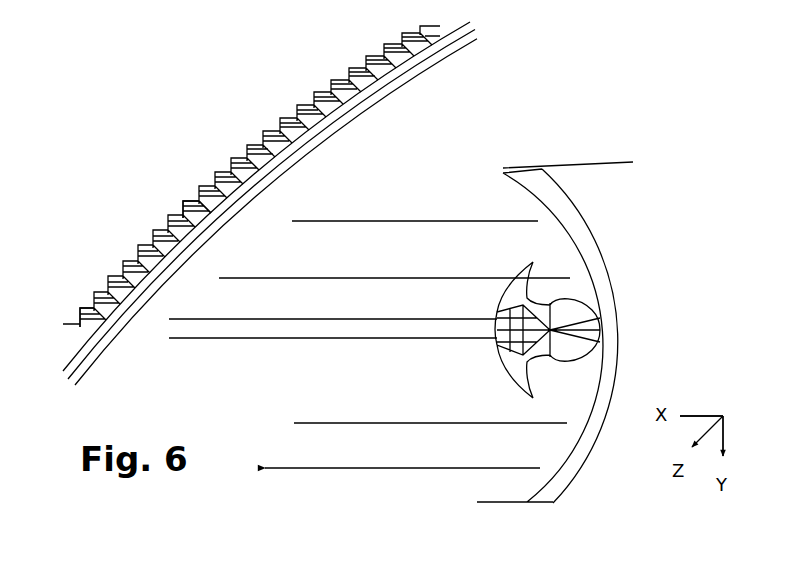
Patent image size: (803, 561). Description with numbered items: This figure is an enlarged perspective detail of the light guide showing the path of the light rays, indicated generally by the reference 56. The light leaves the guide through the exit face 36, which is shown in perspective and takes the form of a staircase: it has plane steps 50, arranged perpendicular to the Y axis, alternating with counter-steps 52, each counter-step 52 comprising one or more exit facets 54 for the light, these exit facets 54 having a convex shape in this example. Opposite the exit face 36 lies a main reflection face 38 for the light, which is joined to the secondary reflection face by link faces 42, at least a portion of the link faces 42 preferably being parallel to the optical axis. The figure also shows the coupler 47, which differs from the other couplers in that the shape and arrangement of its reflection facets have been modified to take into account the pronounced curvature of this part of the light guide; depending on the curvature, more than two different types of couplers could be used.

The exit face 36 is at (296, 54).
The plane steps 50 is at (276, 112).
The exit facets 54 is at (203, 200).
The counter-steps 52 is at (86, 276).
The light rays 56 is at (437, 221).
The main reflection faces 38 is at (614, 303).
The link faces 42 is at (570, 168).
The coupler 47 is at (486, 363).